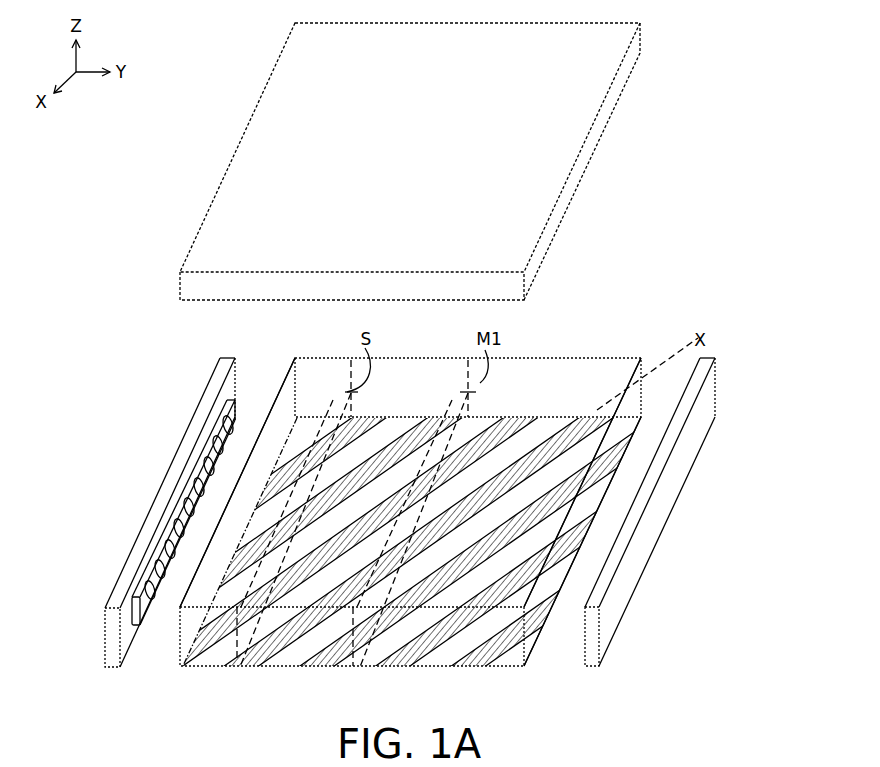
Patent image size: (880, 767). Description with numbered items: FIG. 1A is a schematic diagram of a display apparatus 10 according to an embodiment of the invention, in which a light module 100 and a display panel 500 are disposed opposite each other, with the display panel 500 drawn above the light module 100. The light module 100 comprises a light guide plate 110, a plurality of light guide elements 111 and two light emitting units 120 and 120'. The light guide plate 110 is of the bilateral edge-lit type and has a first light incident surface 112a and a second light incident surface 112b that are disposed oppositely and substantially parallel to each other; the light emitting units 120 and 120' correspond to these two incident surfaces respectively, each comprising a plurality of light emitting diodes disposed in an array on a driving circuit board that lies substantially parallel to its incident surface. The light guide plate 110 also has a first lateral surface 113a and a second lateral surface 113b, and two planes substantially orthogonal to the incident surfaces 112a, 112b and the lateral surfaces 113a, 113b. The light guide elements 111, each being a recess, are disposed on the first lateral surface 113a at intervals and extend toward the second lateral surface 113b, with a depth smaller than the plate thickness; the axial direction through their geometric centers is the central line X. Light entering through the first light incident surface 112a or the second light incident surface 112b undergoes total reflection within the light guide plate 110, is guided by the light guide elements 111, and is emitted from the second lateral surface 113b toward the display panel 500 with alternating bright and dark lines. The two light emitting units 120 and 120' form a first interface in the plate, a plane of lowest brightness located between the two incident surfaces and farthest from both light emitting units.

The display apparatus 10 is at (784, 36).
The light module 100 is at (140, 483).
The display panel 500 is at (535, 263).
The light guide plate 110 is at (502, 658).
The light guide elements 111 is at (388, 665).
The first light incident surface 112a is at (188, 625).
The second light incident surface 112b is at (528, 638).
The first lateral surface 113a is at (430, 665).
The second lateral surface 113b is at (588, 382).
The light emitting unit 120 is at (166, 527).
The light emitting unit 120' is at (646, 527).